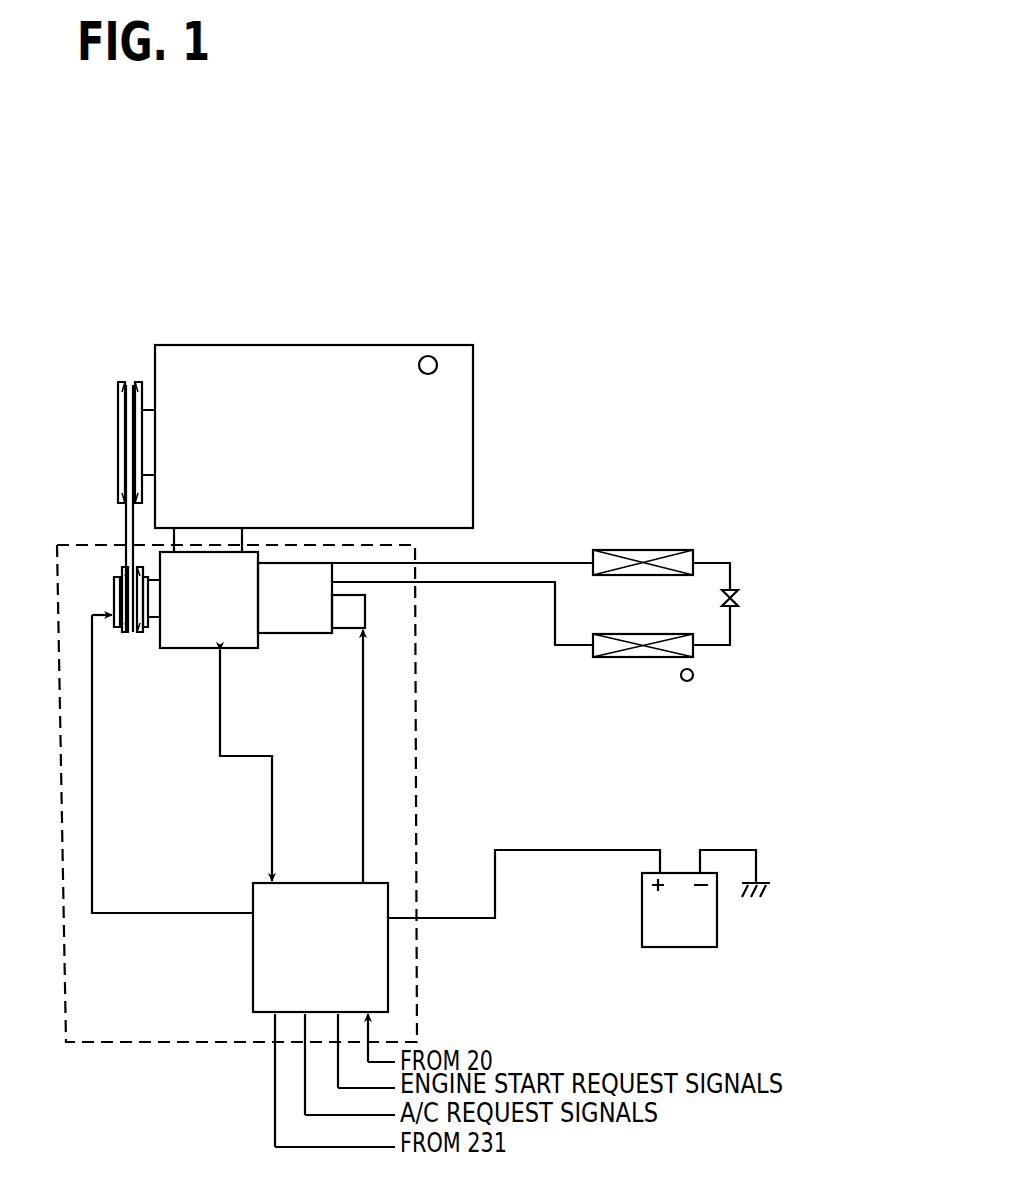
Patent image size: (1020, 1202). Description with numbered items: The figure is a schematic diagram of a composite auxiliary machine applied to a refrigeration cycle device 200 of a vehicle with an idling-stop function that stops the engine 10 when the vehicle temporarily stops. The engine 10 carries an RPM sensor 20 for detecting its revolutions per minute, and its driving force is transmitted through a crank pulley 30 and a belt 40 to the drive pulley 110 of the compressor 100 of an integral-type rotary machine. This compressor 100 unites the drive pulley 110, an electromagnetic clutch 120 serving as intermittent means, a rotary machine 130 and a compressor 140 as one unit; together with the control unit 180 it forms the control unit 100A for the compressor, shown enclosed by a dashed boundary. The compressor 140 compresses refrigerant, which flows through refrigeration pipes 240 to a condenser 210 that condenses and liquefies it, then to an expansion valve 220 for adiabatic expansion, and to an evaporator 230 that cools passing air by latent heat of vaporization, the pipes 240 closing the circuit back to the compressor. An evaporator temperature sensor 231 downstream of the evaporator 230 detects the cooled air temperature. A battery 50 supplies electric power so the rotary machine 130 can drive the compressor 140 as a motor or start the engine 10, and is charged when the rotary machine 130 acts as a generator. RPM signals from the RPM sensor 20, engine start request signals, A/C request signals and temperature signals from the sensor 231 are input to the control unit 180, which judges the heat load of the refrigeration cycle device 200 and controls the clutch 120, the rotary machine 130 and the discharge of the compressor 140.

The engine 10 is at (338, 363).
The RPM sensor 20 is at (427, 356).
The crank pulley 30 is at (118, 408).
The belt 40 is at (128, 535).
The battery 50 is at (675, 935).
The compressor of an integral-type rotary machine 100 is at (235, 644).
The control unit for a compressor of an integral-type rotary machine 100A is at (422, 795).
The drive pulley 110 is at (140, 633).
The electromagnetic clutch 120 is at (118, 633).
The rotary machine 130 is at (233, 630).
The compressor 140 is at (311, 631).
The control unit 180 is at (262, 970).
The refrigeration cycle device 200 is at (577, 588).
The condenser 210 is at (640, 560).
The expansion valve 220 is at (742, 598).
The evaporator 230 is at (620, 650).
The evaporator temperature sensor 231 is at (686, 682).
The refrigeration pipes 240 is at (520, 563).